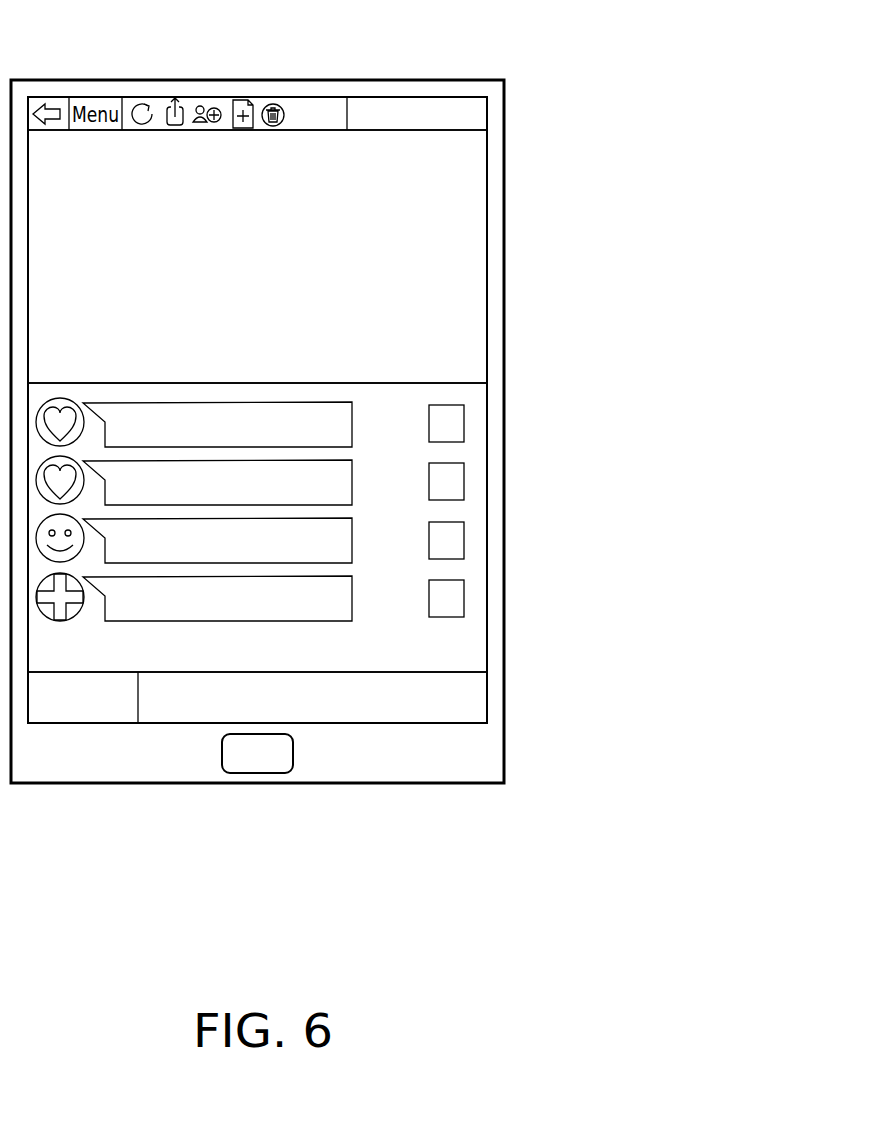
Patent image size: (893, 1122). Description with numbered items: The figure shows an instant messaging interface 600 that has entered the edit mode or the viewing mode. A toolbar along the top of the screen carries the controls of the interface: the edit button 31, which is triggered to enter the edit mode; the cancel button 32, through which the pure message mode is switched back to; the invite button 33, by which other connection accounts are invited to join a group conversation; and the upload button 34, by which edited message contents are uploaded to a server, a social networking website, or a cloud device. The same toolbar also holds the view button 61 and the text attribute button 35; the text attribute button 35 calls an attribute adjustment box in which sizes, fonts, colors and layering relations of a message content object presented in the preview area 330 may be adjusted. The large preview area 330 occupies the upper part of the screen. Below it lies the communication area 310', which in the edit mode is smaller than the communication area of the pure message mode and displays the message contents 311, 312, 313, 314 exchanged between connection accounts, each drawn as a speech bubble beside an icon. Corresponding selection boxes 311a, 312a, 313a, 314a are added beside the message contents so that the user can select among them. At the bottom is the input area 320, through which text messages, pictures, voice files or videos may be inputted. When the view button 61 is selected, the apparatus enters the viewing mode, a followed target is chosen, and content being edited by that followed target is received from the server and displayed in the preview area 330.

The instant messaging interface 600 is at (486, 88).
The view button 61 is at (141, 103).
The upload button 34 is at (176, 97).
The invite button 33 is at (211, 101).
The edit button 31 is at (240, 100).
The cancel button 32 is at (272, 103).
The text attribute button 35 is at (443, 96).
The preview area 330 is at (470, 262).
The communication area 310' is at (303, 527).
The message content 311 is at (353, 424).
The message content 312 is at (353, 482).
The message content 313 is at (353, 540).
The message content 314 is at (353, 598).
The selection box 311a is at (465, 423).
The selection box 312a is at (465, 481).
The selection box 313a is at (465, 540).
The selection box 314a is at (465, 598).
The input area 320 is at (468, 700).